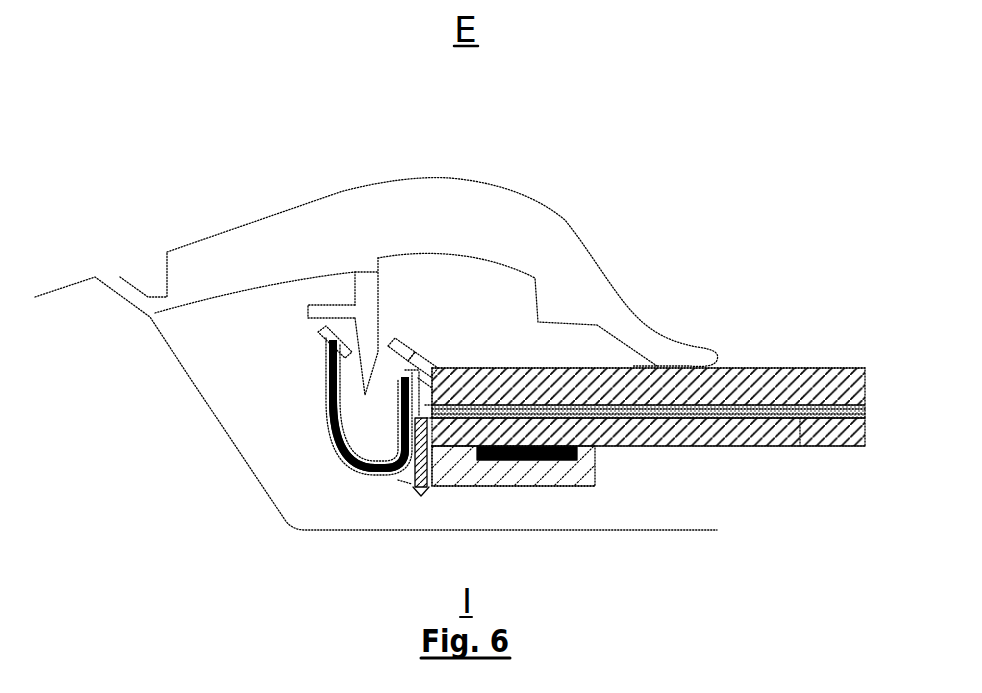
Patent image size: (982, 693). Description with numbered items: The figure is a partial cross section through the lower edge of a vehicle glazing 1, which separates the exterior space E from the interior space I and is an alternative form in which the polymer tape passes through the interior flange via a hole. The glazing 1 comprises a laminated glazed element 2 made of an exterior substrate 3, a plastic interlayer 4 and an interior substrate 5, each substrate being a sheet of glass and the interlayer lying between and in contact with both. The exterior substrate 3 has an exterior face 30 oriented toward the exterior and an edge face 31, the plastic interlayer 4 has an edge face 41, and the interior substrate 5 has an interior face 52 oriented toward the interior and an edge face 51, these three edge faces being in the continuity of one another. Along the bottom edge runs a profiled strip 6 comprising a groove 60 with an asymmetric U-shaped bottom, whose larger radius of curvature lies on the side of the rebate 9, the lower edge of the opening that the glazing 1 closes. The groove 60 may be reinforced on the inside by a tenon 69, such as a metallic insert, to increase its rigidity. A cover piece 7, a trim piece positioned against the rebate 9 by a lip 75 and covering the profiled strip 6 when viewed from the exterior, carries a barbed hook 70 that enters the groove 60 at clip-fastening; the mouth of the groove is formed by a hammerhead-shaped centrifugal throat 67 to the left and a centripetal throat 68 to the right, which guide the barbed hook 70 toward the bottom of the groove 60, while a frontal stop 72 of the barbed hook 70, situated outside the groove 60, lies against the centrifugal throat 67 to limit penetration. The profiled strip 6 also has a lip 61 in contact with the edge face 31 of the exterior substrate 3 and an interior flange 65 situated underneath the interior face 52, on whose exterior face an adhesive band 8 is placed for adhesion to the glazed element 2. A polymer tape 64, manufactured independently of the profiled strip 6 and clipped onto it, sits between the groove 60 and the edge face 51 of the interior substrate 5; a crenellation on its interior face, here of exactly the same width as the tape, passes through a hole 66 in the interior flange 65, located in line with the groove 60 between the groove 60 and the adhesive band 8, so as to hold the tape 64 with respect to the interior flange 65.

The glazing 1 is at (584, 123).
The glazed element 2 is at (707, 218).
The exterior substrate 3 is at (833, 389).
The plastic interlayer 4 is at (828, 410).
The interior substrate 5 is at (801, 424).
The profiled strip 6 is at (251, 386).
The cover piece 7 is at (535, 224).
The adhesive band 8 is at (577, 452).
The rebate 9 is at (202, 399).
The exterior face 30 is at (815, 378).
The edge face 31 is at (447, 369).
The edge face 41 is at (435, 411).
The edge face 51 is at (517, 468).
The interior face 52 is at (700, 447).
The groove 60 is at (370, 412).
The lip 61 is at (428, 383).
The polymer tape 64 is at (428, 422).
The interior flange 65 is at (520, 488).
The hole 66 is at (406, 480).
The centrifugal throat 67 is at (343, 345).
The centripetal throat 68 is at (406, 353).
The tenon 69 is at (332, 398).
The barbed hook 70 is at (370, 287).
The frontal stop 72 is at (330, 317).
The lip 75 is at (135, 290).